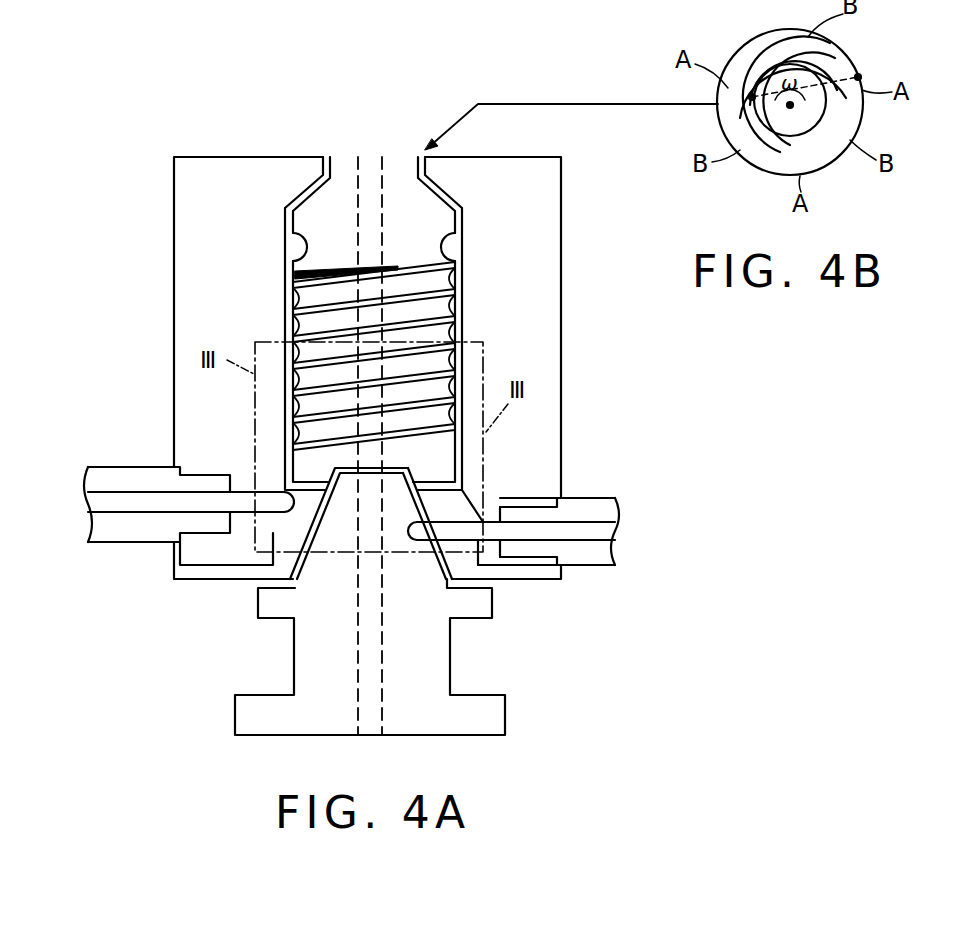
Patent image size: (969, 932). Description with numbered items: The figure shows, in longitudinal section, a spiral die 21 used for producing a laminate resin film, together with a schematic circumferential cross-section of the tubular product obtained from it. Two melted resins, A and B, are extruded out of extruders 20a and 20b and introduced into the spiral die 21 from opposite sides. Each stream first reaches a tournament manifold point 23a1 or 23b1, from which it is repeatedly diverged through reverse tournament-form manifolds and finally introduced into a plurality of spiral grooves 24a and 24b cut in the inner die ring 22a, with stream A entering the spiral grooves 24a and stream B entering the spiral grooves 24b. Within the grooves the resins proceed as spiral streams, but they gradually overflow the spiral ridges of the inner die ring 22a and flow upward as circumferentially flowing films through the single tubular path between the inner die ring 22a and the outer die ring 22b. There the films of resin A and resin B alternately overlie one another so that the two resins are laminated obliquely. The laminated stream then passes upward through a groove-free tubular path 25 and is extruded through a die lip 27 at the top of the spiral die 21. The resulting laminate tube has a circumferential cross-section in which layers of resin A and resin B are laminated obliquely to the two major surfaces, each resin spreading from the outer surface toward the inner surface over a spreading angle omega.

The spiral die 21 is at (562, 364).
The die lip 27 is at (330, 158).
The groove-free tubular path 25 is at (450, 246).
The inner die ring 22a is at (441, 234).
The outer die ring 22b is at (540, 319).
The spiral groove 24a is at (310, 456).
The spiral groove 24b is at (310, 420).
The tournament manifold point 23a1 is at (295, 520).
The tournament manifold point 23b1 is at (416, 544).
The extruder 20a is at (28, 498).
The extruder 20b is at (633, 535).